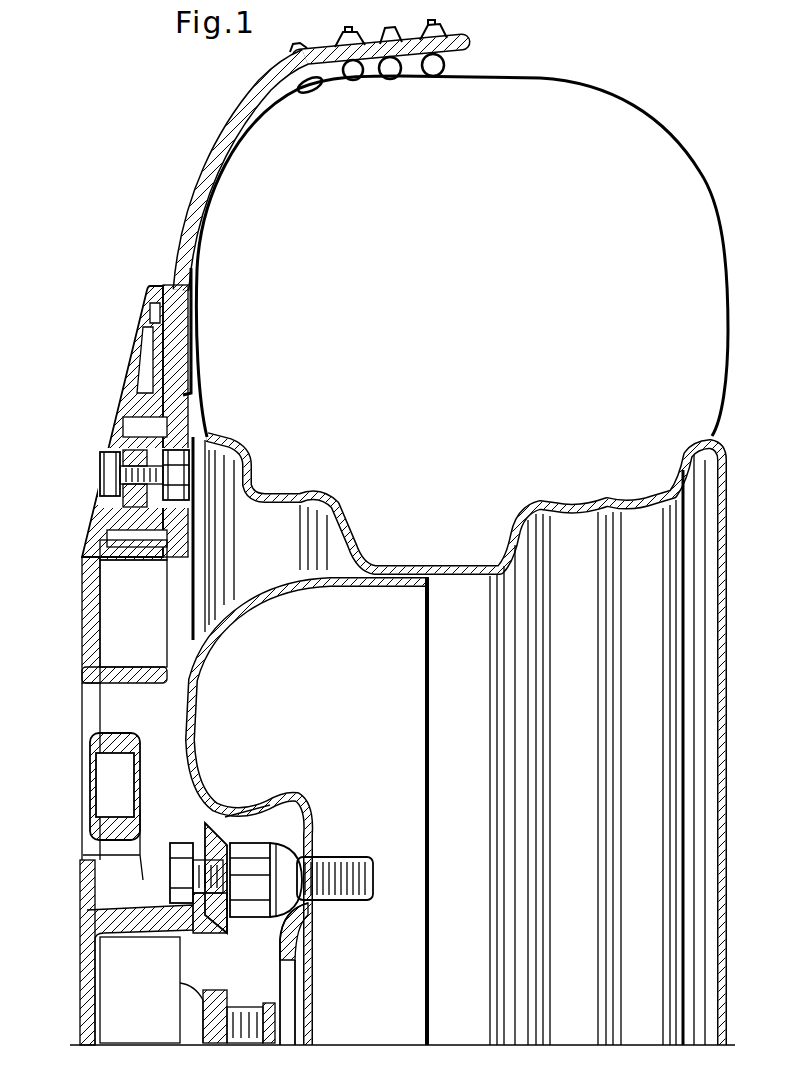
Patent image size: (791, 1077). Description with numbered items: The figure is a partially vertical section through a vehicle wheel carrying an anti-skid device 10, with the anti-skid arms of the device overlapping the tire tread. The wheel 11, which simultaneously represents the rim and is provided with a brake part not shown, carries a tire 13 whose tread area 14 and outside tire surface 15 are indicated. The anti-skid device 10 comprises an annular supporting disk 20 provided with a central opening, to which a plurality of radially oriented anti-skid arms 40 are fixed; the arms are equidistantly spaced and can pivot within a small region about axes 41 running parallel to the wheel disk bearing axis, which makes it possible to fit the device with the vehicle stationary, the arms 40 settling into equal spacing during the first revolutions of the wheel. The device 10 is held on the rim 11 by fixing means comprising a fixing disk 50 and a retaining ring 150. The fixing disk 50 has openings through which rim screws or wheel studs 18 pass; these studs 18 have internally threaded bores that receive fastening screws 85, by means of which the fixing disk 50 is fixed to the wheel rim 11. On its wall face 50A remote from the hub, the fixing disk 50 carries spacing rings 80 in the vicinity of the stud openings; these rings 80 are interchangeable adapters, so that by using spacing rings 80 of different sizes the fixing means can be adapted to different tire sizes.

The anti-skid device 10 is at (114, 316).
The vehicle wheel rim 11 is at (202, 752).
The tire 13 is at (597, 118).
The tread area 14 is at (525, 73).
The outside tire surface 15 is at (190, 270).
The rim screw or wheel stud 18 is at (310, 838).
The annular supporting disk 20 is at (87, 530).
The anti-skid arm 40 is at (218, 152).
The pivot axis 41 is at (103, 470).
The fixing disk 50 is at (205, 827).
The wall face 50A is at (192, 812).
The spacing ring 80 is at (267, 798).
The fastening screw 85 is at (205, 900).
The retaining ring 150 is at (100, 735).